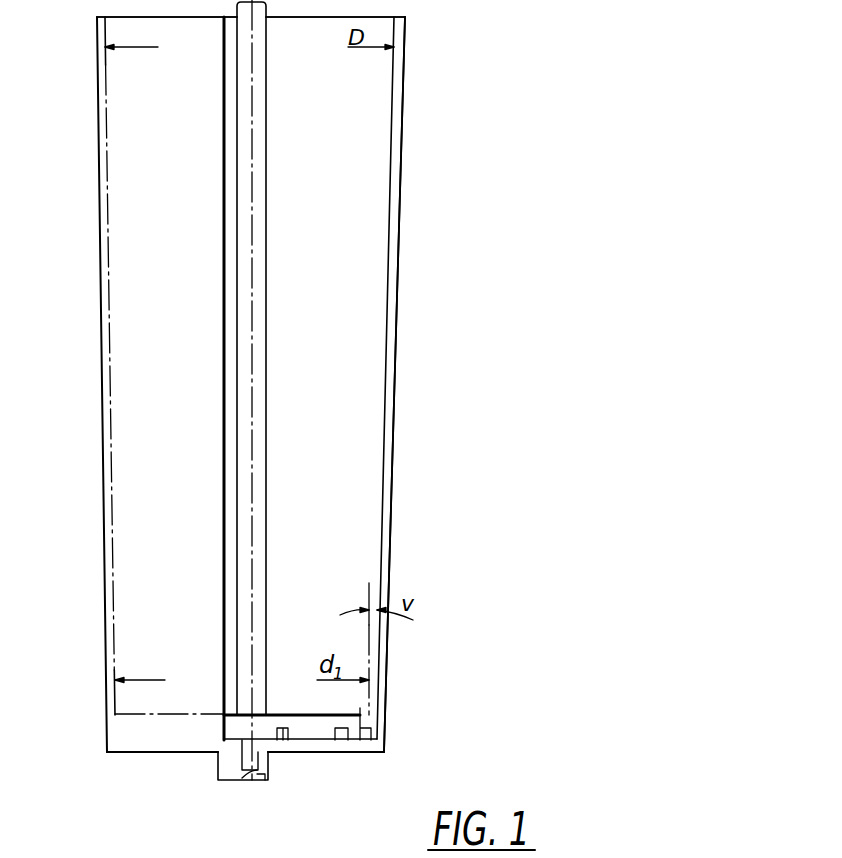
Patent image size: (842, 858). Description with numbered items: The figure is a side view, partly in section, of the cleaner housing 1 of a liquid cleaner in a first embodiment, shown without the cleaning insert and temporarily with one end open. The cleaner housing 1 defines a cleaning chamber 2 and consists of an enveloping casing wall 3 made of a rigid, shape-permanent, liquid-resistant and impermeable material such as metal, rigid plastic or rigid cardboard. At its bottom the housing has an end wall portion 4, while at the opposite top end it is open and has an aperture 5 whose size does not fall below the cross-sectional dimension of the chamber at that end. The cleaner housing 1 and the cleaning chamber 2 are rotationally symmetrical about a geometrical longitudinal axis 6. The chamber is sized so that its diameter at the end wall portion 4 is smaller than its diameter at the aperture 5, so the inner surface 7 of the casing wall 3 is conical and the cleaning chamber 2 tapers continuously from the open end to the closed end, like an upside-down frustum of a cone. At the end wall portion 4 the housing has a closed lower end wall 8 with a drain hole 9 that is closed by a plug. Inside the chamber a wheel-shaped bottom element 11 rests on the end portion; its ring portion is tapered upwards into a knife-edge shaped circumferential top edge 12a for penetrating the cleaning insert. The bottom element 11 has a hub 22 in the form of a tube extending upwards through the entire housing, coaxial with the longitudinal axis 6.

The cleaner housing 1 is at (395, 540).
The cleaning chamber 2 is at (380, 508).
The casing wall 3 is at (388, 447).
The end wall portion 4 is at (332, 750).
The aperture 5 is at (380, 17).
The geometrical longitudinal axis 6 is at (250, 575).
The inner surface 7 is at (382, 389).
The lower end wall 8 is at (292, 747).
The drain hole 9 is at (247, 770).
The bottom element 11 is at (358, 713).
The circumferential top edge 12a is at (298, 715).
The hub 22 is at (257, 372).